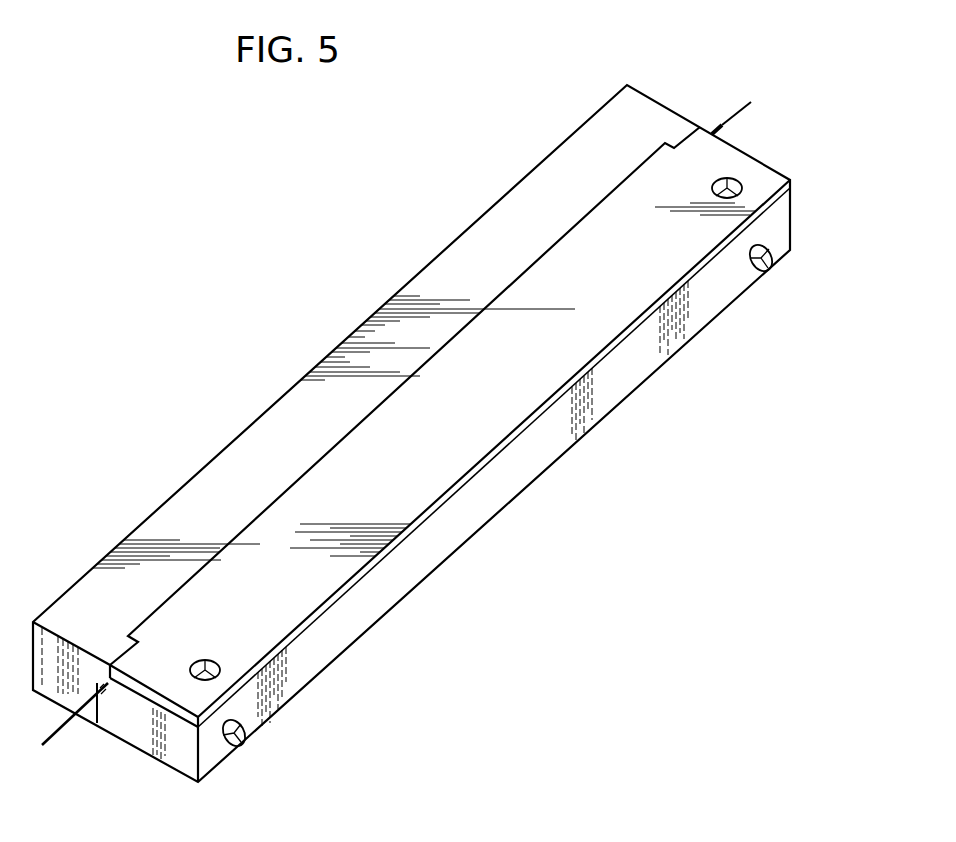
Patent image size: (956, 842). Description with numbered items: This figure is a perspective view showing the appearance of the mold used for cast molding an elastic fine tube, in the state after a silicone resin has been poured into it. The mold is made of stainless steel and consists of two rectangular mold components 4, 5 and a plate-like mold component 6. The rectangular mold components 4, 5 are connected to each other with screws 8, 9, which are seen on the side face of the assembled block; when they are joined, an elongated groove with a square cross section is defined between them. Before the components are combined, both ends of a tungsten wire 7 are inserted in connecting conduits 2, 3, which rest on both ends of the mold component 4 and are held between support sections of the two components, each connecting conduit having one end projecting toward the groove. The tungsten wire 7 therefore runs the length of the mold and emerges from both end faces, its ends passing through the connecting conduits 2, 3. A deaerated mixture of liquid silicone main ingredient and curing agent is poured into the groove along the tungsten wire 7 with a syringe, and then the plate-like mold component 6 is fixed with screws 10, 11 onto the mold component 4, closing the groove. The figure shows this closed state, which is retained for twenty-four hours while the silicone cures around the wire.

The connecting conduit 2 is at (716, 126).
The connecting conduit 3 is at (98, 703).
The rectangular mold component 4 is at (505, 488).
The rectangular mold component 5 is at (290, 422).
The plate-like mold component 6 is at (577, 338).
The tungsten wire 7 is at (46, 742).
The screw 8 is at (770, 262).
The screw 9 is at (238, 738).
The screw 10 is at (740, 180).
The screw 11 is at (205, 665).